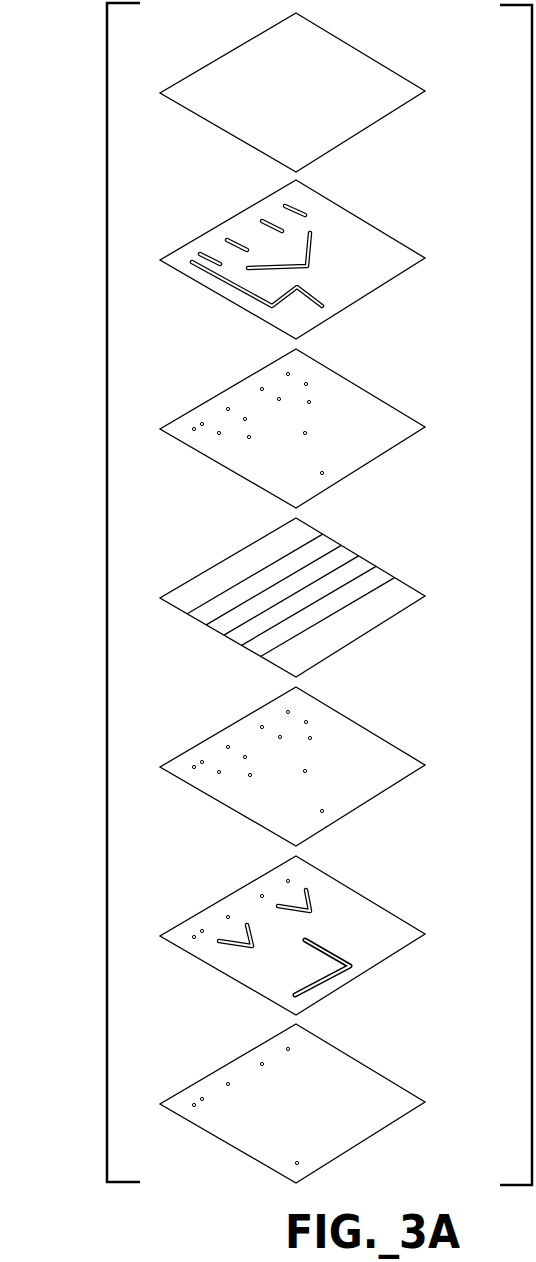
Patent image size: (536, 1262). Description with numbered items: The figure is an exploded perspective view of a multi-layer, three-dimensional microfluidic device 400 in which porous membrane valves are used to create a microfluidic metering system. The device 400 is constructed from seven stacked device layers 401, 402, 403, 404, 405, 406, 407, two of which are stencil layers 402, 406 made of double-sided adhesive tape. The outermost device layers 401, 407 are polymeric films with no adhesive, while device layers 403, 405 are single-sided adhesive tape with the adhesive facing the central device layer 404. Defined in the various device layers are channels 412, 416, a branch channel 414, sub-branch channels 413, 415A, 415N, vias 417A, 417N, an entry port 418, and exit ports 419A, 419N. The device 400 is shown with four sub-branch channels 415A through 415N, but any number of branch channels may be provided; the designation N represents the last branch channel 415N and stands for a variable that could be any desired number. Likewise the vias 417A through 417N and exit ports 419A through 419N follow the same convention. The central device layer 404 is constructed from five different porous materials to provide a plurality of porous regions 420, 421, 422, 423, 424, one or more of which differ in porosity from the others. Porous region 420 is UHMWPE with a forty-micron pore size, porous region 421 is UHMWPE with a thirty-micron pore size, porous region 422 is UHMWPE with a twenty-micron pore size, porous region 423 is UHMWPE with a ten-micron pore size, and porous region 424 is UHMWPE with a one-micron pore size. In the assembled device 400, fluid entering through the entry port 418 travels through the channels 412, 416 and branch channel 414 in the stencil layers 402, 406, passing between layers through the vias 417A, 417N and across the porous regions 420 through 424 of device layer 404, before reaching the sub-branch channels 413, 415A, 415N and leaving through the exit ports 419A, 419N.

The microfluidic device 400 is at (97, 593).
The device layer 401 is at (427, 1102).
The stencil layer 402 is at (426, 935).
The device layer 403 is at (426, 766).
The device layer 404 is at (426, 597).
The device layer 405 is at (426, 428).
The stencil layer 406 is at (426, 259).
The device layer 407 is at (426, 91).
The channel 412 is at (334, 953).
The sub-branch channel 413 is at (310, 893).
The branch channel 414 is at (312, 247).
The sub-branch channel 415A is at (208, 258).
The sub-branch channel 415N is at (291, 207).
The channel 416 is at (227, 283).
The via 417A is at (250, 777).
The via 417N is at (228, 407).
The entry port 418 is at (297, 1165).
The exit port 419A is at (203, 1097).
The exit port 419N is at (288, 1047).
The porous region 420 is at (285, 664).
The porous region 421 is at (370, 572).
The porous region 422 is at (232, 623).
The porous region 423 is at (260, 577).
The porous region 424 is at (279, 536).